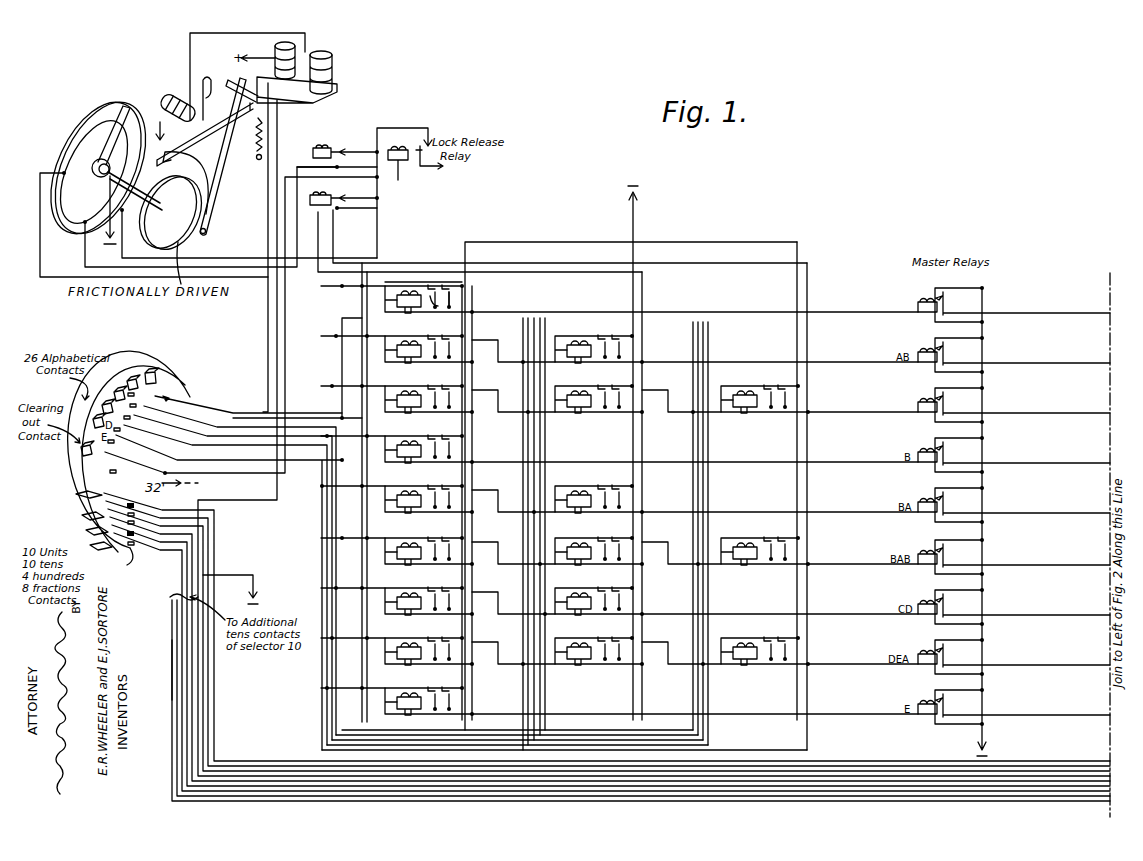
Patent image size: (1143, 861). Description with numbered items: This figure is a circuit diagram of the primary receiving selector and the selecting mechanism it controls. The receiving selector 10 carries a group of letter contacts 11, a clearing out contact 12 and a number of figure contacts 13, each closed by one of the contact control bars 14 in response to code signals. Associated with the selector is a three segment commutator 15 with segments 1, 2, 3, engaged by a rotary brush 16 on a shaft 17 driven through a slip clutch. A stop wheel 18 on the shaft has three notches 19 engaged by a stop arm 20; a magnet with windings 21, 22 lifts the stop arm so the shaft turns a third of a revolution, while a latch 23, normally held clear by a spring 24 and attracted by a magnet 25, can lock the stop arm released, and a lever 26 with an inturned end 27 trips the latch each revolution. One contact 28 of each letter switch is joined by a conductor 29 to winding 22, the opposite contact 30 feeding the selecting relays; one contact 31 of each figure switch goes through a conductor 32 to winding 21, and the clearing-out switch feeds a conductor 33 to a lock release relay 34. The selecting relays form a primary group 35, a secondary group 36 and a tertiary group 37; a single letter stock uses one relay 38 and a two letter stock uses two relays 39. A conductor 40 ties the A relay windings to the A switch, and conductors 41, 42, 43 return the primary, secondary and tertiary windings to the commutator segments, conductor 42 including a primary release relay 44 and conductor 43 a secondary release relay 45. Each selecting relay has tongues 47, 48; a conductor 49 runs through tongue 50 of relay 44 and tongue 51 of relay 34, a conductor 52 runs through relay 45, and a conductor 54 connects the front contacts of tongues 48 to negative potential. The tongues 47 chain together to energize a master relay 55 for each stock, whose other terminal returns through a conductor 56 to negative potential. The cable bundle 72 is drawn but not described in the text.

The segment 1 is at (154, 213).
The segment 2 is at (211, 216).
The segment 3 is at (120, 135).
The receiving selector 10 is at (118, 368).
The letter contacts 11 is at (178, 392).
The clearing out contact 12 is at (100, 455).
The figure contacts 13 is at (130, 562).
The contact control bars 14 is at (153, 373).
The three segment commutator 15 is at (78, 123).
The rotary brush 16 is at (120, 110).
The shaft 17 is at (135, 185).
The stop wheel 18 is at (198, 170).
The notches 19 is at (248, 213).
The stop arm 20 is at (176, 152).
The winding 21 is at (333, 74).
The winding 22 is at (274, 54).
The latch 23 is at (209, 78).
The spring 24 is at (249, 103).
The magnet 25 is at (172, 98).
The lever 26 is at (222, 185).
The inturned end 27 is at (242, 83).
The contact 28 is at (206, 415).
The conductor 29 is at (267, 348).
The contact 30 is at (190, 408).
The contact 31 is at (128, 500).
The conductor 32 is at (276, 313).
The conductor 33 is at (286, 330).
The lock release relay 34 is at (404, 193).
The primary selecting relay group 35 is at (415, 475).
The secondary selecting relay group 36 is at (558, 451).
The tertiary selecting relay group 37 is at (726, 449).
The single letter selecting relay 38 is at (416, 302).
The two letter selecting relays 39 is at (397, 356).
The conductor 40 is at (312, 417).
The conductor 41 is at (456, 294).
The conductor 42 is at (642, 334).
The conductor 43 is at (808, 340).
The primary release relay 44 is at (339, 194).
The secondary release relay 45 is at (323, 148).
The contact tongue 47 is at (440, 310).
The contact tongue 48 is at (462, 292).
The conductor 49 is at (361, 294).
The contact tongue 50 is at (336, 214).
The tongue 51 is at (423, 168).
The conductor 52 is at (341, 320).
The conductor 54 is at (525, 245).
The master relay 55 is at (924, 297).
The conductor 56 is at (989, 406).
The cable bundle 72 is at (216, 686).